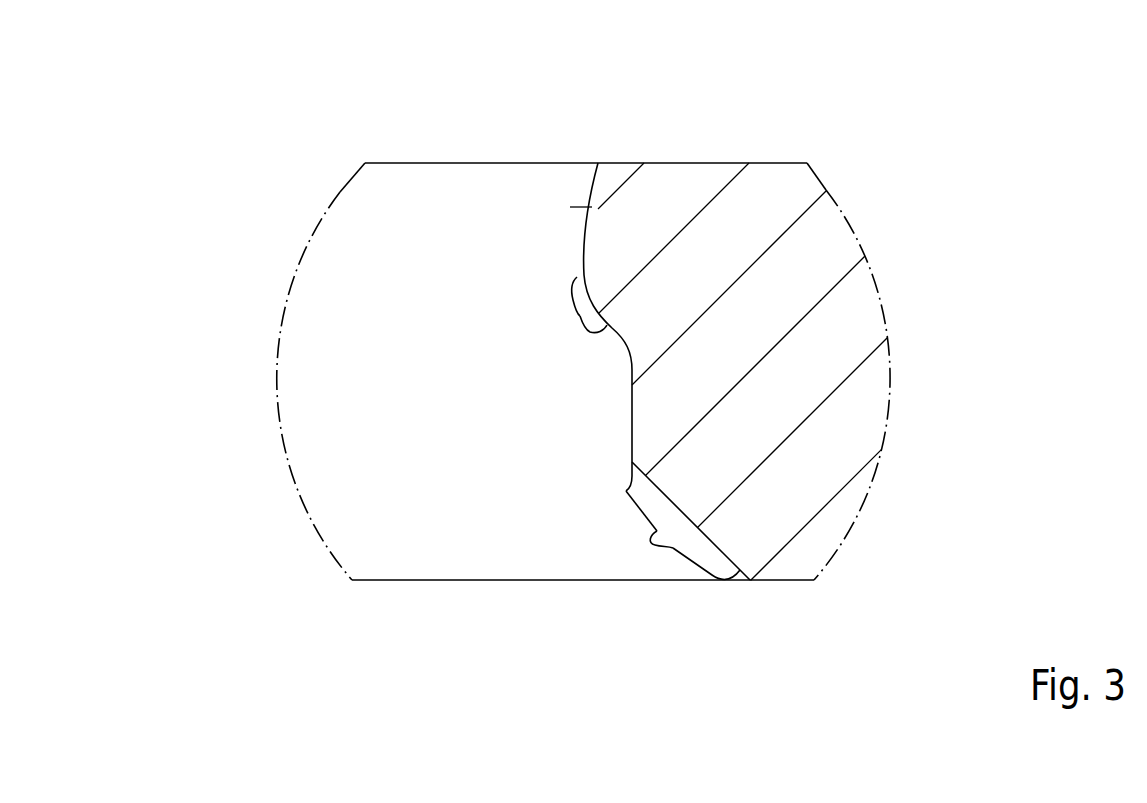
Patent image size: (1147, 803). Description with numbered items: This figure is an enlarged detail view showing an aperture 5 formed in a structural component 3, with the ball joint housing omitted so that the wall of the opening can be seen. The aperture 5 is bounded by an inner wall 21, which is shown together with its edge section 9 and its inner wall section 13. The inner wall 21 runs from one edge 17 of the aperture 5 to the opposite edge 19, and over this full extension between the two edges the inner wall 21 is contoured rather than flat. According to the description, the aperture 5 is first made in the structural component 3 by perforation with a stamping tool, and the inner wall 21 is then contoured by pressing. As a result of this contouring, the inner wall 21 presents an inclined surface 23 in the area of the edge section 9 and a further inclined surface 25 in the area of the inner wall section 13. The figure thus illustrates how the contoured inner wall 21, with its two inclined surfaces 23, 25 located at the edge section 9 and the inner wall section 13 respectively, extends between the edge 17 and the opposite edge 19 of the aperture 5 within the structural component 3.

The structural component 3 is at (871, 272).
The aperture 5 is at (438, 162).
The edge section 9 is at (657, 543).
The inner wall section 13 is at (577, 313).
The edge 17 is at (753, 585).
The opposite edge 19 is at (600, 160).
The inner wall 21 is at (590, 206).
The inclined surface 23 is at (676, 538).
The inclined surface 25 is at (586, 328).